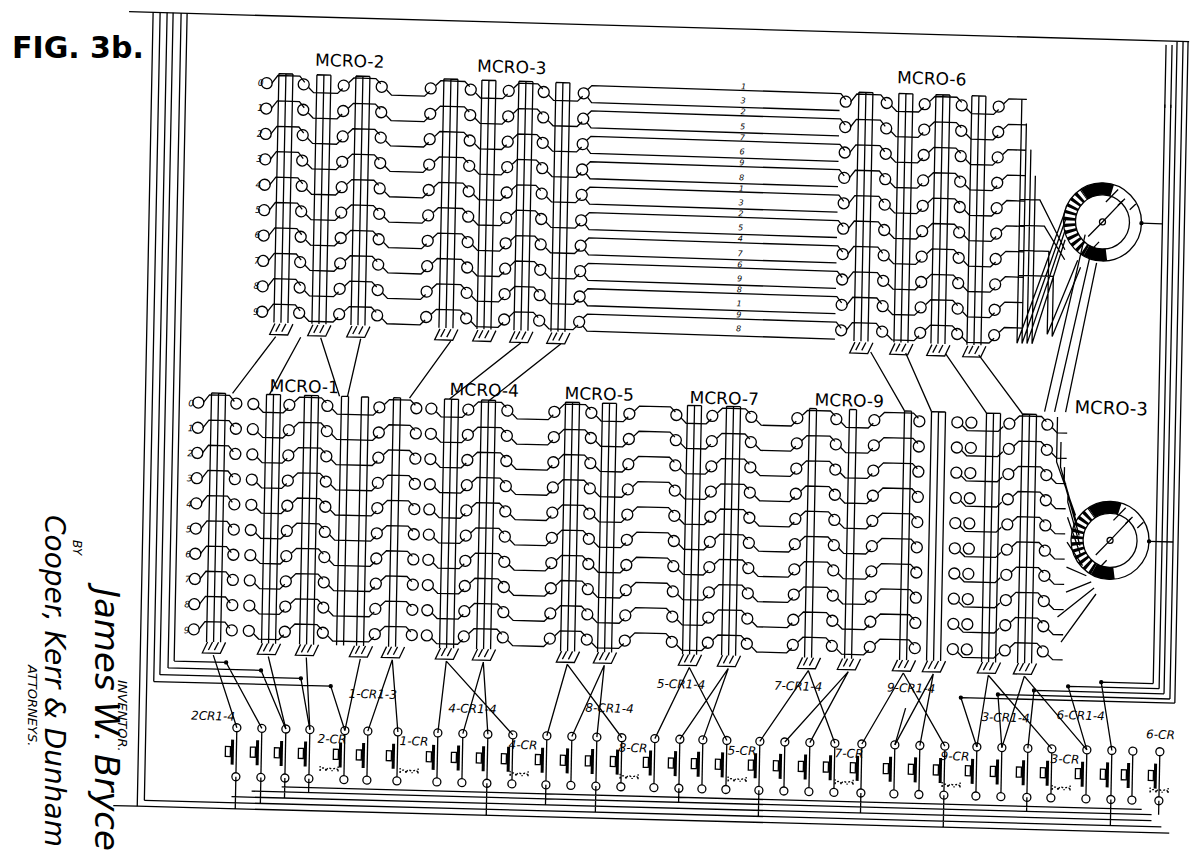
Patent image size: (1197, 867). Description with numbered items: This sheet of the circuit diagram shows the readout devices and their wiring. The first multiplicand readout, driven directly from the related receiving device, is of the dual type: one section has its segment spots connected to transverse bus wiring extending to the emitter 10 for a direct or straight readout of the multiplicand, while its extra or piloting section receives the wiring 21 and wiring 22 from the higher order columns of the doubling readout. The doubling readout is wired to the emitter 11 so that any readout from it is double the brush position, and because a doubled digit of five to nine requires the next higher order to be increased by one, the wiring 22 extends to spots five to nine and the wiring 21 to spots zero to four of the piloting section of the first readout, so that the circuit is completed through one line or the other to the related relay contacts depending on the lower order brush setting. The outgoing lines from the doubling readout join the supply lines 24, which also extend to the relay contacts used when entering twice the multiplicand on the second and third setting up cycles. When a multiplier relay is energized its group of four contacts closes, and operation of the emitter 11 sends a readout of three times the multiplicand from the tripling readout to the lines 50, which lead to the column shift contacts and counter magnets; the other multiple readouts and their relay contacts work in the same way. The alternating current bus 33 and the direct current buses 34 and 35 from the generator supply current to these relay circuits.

The emitter 10 is at (1123, 566).
The emitter 11 is at (1114, 245).
The wiring 21 is at (327, 360).
The wiring 22 is at (280, 362).
The supply lines 24 is at (195, 680).
The bus 33 is at (1170, 448).
The bus 34 is at (158, 260).
The bus 35 is at (158, 306).
The lines 50 is at (929, 735).